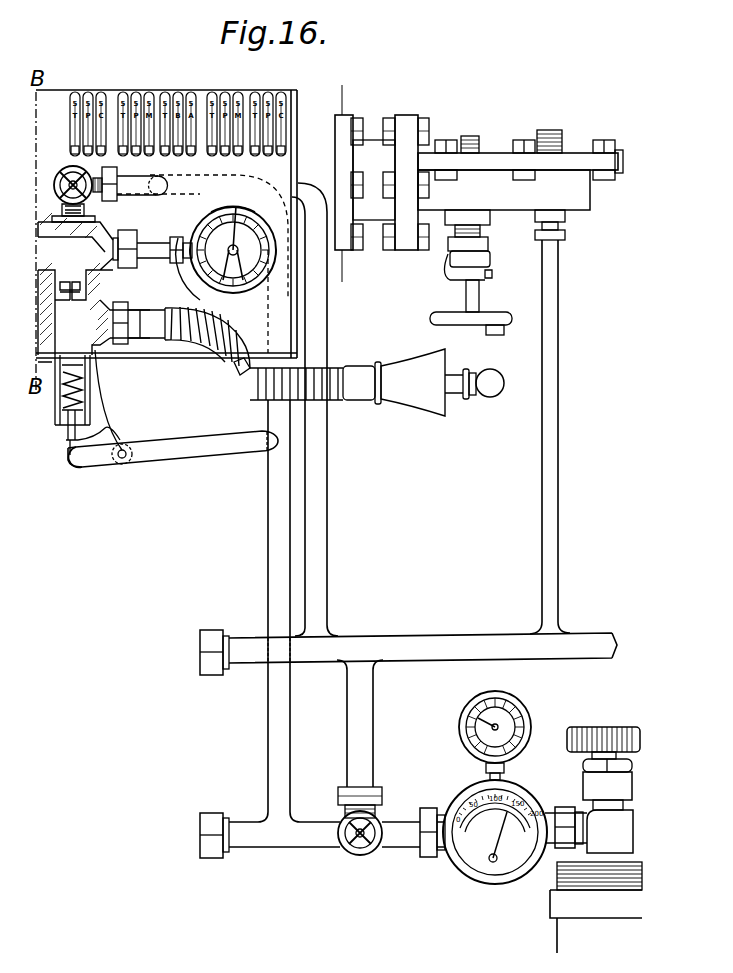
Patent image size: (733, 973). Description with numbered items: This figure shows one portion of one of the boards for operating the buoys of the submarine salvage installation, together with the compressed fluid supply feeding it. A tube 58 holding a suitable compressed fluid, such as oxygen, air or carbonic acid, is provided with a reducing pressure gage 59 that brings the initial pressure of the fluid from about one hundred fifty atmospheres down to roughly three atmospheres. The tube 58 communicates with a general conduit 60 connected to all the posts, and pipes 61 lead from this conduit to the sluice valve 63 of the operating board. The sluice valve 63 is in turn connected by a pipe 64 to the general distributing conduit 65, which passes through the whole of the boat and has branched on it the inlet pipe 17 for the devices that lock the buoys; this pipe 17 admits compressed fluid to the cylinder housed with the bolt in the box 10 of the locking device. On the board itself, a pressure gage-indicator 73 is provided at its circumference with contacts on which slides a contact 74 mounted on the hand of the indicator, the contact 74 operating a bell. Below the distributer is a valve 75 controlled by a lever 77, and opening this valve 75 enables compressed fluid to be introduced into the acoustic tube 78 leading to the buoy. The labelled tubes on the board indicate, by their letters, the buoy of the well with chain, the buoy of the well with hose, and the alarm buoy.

The box 10 is at (572, 178).
The conduit 17 is at (542, 450).
The tube 58 is at (596, 907).
The reducing pressure gage 59 is at (512, 753).
The general conduit 60 is at (287, 845).
The pipe 61 is at (268, 722).
The sluice valve 63 is at (86, 200).
The pipe 64 is at (320, 483).
The general distributing conduit 65 is at (420, 646).
The pressure gage-indicator 73 is at (193, 270).
The contact 74 is at (215, 208).
The valve 75 is at (96, 286).
The lever 77 is at (170, 448).
The acoustic tube 78 is at (238, 356).